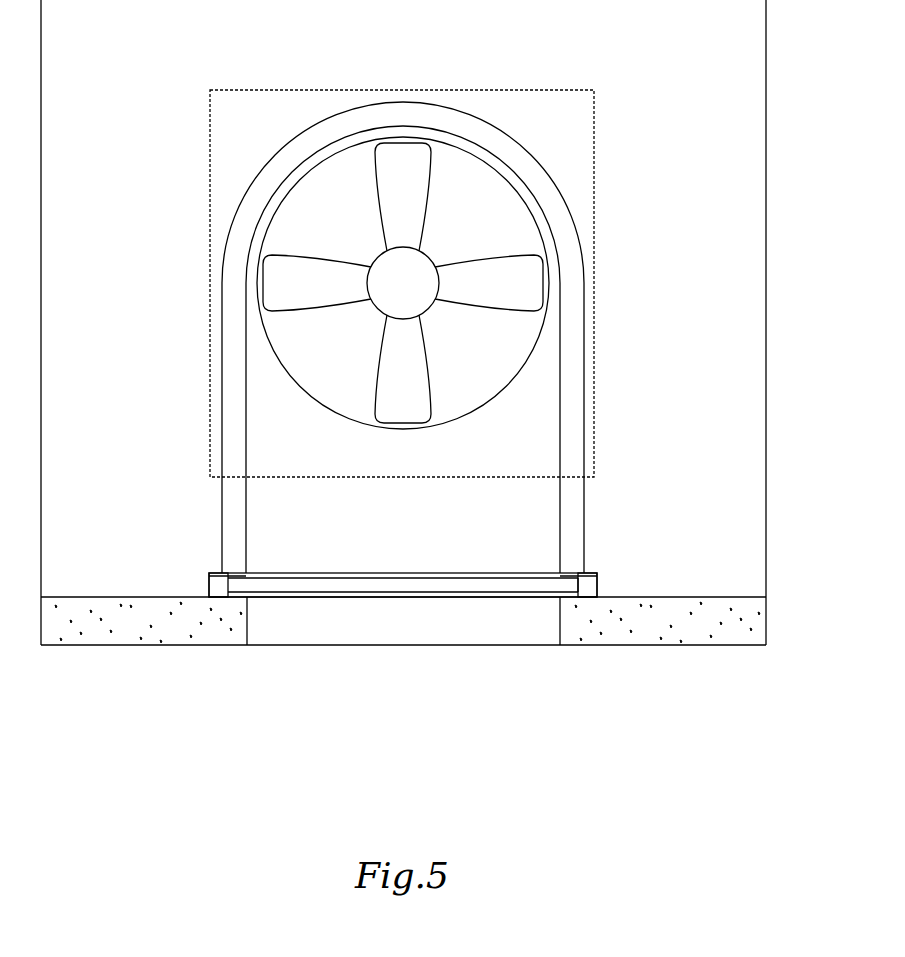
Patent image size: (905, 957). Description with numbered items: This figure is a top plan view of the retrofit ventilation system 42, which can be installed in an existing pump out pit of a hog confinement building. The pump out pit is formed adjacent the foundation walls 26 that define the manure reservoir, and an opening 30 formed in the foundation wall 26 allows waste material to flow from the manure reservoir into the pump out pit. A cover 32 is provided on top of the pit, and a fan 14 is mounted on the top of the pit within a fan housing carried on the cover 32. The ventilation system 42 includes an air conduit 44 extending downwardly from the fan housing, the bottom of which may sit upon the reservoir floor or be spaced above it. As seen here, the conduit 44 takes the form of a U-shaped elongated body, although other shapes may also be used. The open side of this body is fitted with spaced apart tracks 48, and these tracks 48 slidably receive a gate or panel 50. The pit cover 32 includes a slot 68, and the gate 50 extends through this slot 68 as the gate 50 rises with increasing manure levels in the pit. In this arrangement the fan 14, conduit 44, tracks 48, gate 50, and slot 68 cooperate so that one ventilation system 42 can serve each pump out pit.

The fan 14 is at (512, 278).
The foundation walls 26 is at (118, 637).
The opening 30 is at (390, 613).
The cover 32 is at (748, 77).
The ventilation system 42 is at (176, 507).
The air conduit 44 is at (580, 512).
The tracks 48 is at (215, 573).
The gate 50 is at (340, 582).
The slot 68 is at (596, 585).